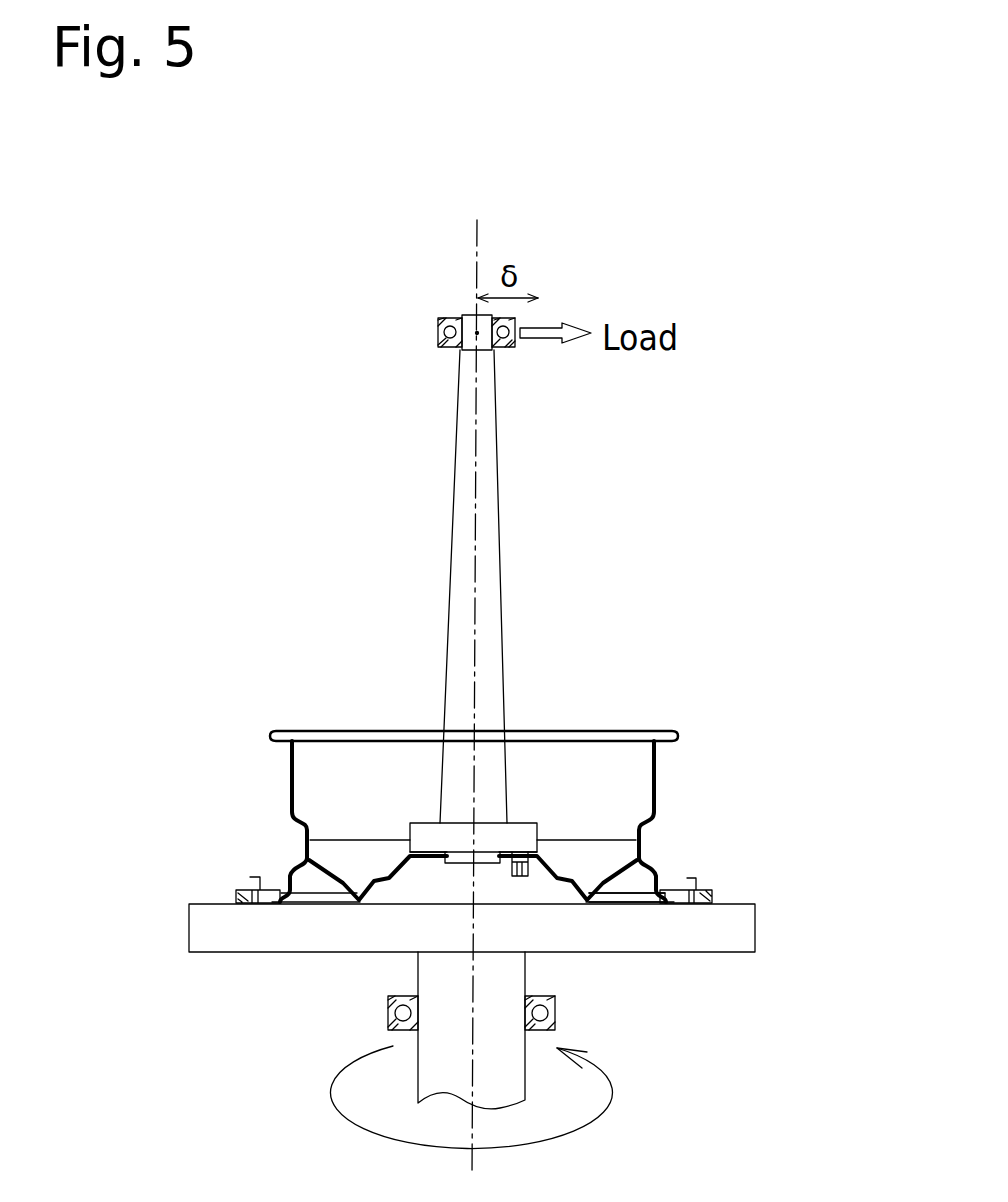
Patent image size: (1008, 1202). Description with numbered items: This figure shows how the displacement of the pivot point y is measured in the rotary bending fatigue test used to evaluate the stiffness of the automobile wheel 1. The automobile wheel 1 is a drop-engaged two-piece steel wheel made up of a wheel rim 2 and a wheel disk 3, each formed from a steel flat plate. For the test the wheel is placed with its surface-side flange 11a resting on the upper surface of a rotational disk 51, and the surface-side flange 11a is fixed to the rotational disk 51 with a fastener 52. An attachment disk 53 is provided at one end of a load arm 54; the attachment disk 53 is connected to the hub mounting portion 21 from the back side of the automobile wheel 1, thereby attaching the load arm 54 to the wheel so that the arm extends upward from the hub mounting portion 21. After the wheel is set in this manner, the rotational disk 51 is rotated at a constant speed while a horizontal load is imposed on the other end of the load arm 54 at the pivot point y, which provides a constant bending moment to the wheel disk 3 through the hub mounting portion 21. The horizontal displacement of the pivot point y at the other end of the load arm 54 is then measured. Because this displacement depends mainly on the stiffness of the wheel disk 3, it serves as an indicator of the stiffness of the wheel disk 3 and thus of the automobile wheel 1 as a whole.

The automobile wheel 1 is at (495, 885).
The wheel rim 2 is at (655, 780).
The wheel disk 3 is at (380, 877).
The hub mounting portion 21 is at (413, 857).
The surface-side flange 11a is at (673, 900).
The rotational disk 51 is at (618, 940).
The fastener 52 is at (278, 888).
The attachment disk 53 is at (510, 838).
The load arm 54 is at (455, 540).
The pivot point y is at (477, 332).